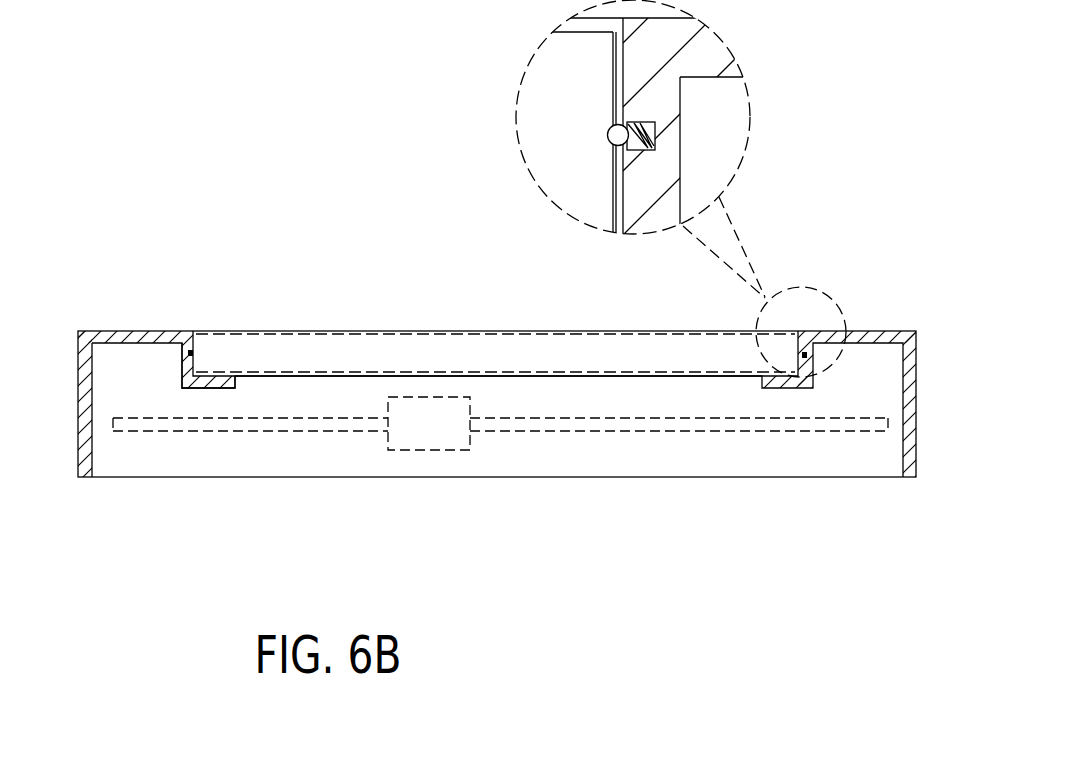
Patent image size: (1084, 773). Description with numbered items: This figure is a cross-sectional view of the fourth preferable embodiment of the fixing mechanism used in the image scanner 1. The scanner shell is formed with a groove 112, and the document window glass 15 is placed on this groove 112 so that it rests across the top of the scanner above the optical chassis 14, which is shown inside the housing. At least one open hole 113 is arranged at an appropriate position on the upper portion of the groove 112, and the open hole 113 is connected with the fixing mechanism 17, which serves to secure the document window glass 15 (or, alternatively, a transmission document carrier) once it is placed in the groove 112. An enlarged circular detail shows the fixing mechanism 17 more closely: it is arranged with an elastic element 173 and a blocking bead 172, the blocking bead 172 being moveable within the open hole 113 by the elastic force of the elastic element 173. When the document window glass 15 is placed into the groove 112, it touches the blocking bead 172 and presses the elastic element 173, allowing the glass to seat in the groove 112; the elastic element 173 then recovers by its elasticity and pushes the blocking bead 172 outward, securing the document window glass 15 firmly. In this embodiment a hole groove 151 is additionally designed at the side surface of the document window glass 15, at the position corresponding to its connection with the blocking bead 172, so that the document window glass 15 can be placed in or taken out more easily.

The image scanner 1 is at (95, 333).
The groove 112 is at (270, 384).
The open hole 113 is at (655, 141).
The optical chassis 14 is at (463, 440).
The document window glass 15 is at (303, 362).
The hole groove 151 is at (610, 212).
The fixing mechanism 17 is at (778, 328).
The blocking bead 172 is at (608, 128).
The elastic element 173 is at (630, 152).